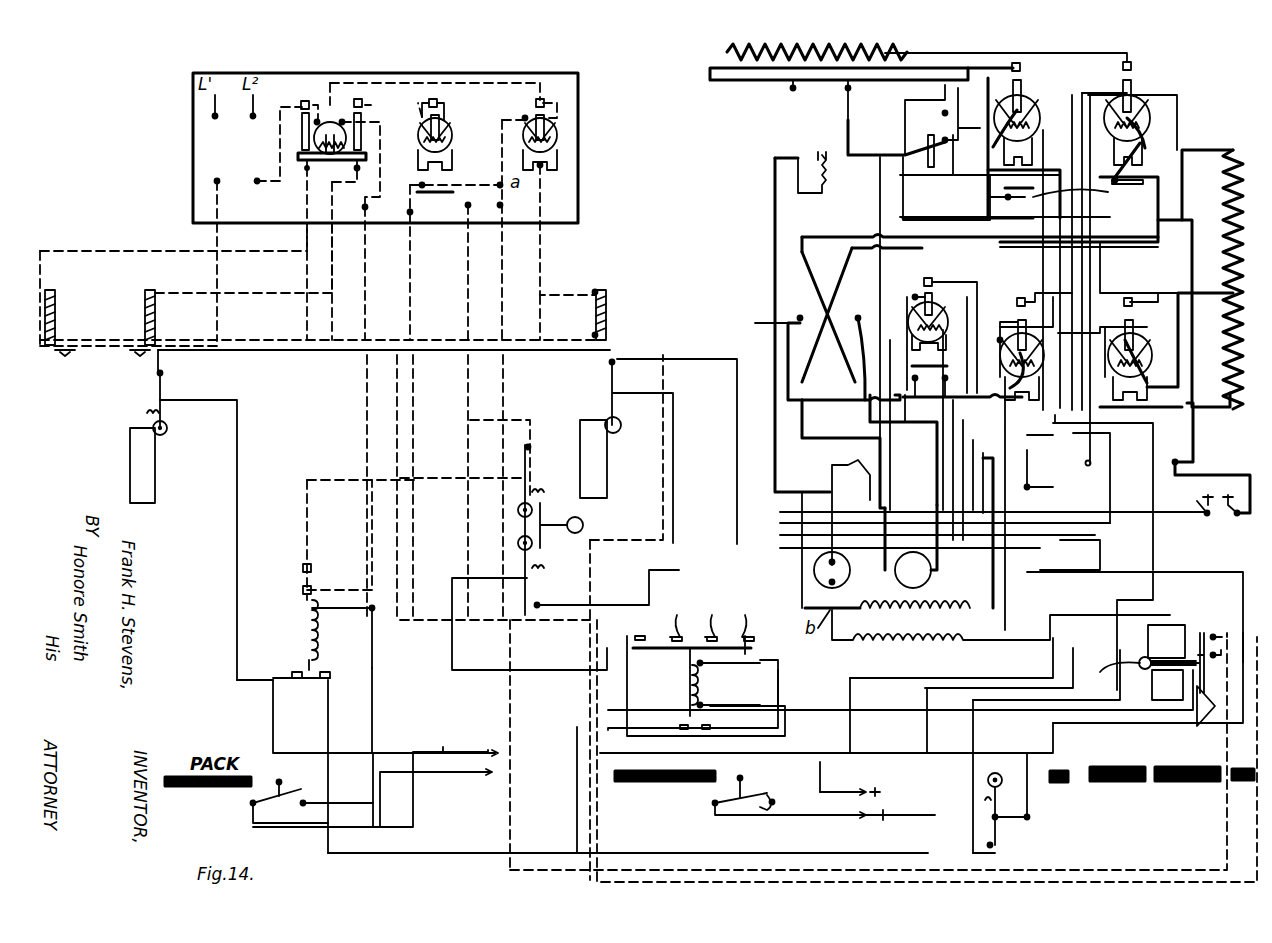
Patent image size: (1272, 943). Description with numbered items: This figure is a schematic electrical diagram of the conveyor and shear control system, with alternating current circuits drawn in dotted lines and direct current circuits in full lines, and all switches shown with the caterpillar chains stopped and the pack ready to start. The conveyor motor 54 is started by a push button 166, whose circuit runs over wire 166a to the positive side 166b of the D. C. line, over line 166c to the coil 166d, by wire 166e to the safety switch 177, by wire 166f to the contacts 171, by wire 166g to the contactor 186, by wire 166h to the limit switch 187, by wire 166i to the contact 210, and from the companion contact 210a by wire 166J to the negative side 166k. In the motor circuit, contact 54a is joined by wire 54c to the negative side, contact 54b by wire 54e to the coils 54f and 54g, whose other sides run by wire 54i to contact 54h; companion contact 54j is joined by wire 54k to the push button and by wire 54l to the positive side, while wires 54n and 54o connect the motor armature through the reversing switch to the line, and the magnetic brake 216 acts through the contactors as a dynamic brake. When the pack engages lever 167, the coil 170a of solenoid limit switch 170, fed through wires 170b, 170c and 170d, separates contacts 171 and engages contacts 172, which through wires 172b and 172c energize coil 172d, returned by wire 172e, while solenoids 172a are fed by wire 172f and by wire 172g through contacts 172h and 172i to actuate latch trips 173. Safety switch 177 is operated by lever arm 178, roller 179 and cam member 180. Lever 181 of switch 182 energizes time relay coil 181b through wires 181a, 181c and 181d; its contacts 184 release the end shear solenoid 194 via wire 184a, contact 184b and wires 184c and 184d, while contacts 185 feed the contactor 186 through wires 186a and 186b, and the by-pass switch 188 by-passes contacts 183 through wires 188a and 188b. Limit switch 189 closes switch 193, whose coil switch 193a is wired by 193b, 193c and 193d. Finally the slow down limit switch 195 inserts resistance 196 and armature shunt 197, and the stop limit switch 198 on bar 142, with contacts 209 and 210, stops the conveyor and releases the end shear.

The conveyor motor 54 is at (928, 575).
The contact 54a is at (1025, 250).
The contact 54b is at (1145, 190).
The wire 54c is at (845, 236).
The wire 54e is at (1045, 282).
The coil (contactor) 54f is at (1000, 330).
The coil (contactor) 54g is at (1160, 375).
The contact 54h is at (1140, 138).
The wire 54i is at (1100, 290).
The companion contact 54j is at (1145, 172).
The wire 54k is at (915, 205).
The wire 54l is at (1128, 510).
The wire 54n is at (760, 319).
The wire 54o is at (858, 315).
The adjustable bar (stop bar) 142 is at (1160, 632).
The push button 166 is at (1212, 515).
The wire 166a is at (1180, 510).
The positive side of the D. C. line 166b is at (793, 92).
The line (wire) 166c is at (1195, 440).
The coil 166d is at (1020, 98).
The wire 166e is at (320, 352).
The wire 166f is at (236, 585).
The wire 166g is at (412, 855).
The wire 166h is at (676, 460).
The wire 166i is at (866, 720).
The wire 166J is at (1230, 583).
The negative side of the D. C. line 166k is at (852, 95).
The lever (switch) 167 is at (262, 805).
The solenoid limit switch 170 is at (306, 640).
The coil (solenoid) 170a is at (318, 645).
The wire 170b is at (374, 700).
The wire 170c is at (410, 827).
The wire 170d is at (273, 690).
The contacts 171 is at (297, 680).
The contacts 172 is at (312, 568).
The solenoids 172a is at (48, 292).
The wire 172b is at (335, 480).
The wire 172c is at (365, 330).
The coil 172d is at (335, 120).
The wire 172e is at (292, 102).
The wire 172f is at (103, 346).
The wire 172g is at (42, 251).
The contact 172h is at (308, 113).
The contact 172i is at (360, 99).
The latch trips 173 is at (56, 310).
The safety switch 177 is at (163, 373).
The switch lever arm 178 is at (161, 413).
The roller 179 is at (168, 430).
The cam member 180 is at (157, 460).
The lever (switch) 181 is at (760, 778).
The wire 181a is at (784, 822).
The time relay coil (solenoid) 181b is at (702, 692).
The wire 181c is at (800, 690).
The wire 181d is at (822, 772).
The switch 182 is at (778, 803).
The contacts 183 is at (682, 726).
The contacts 184 is at (720, 622).
The wire 184a is at (425, 622).
The contact 184b is at (438, 172).
The wire 184c is at (425, 102).
The wire 184d is at (470, 410).
The contacts 185 is at (680, 650).
The contactor 186 is at (936, 284).
The wire 186a is at (690, 506).
The wire 186b is at (1010, 660).
The limit switch (safety switch) 187 is at (610, 365).
The by-pass switch 188 is at (520, 568).
The wire 188a is at (618, 596).
The wire 188b is at (513, 665).
The limit switch 189 is at (518, 500).
The switch 193 is at (450, 128).
The switch (coil) 193a is at (557, 140).
The wire 193b is at (545, 275).
The wire 193c is at (642, 340).
The wire 193d is at (522, 76).
The end shear solenoid 194 is at (606, 292).
The slow down limit switch 195 is at (1000, 838).
The resistance 196 is at (1225, 210).
The armature shunt 197 is at (798, 49).
The stop limit switch 198 is at (1142, 675).
The contact 209 is at (1215, 632).
The contact 210 is at (1171, 685).
The companion contact 210a is at (1200, 712).
The magnetic brake (solenoid) 216 is at (848, 580).